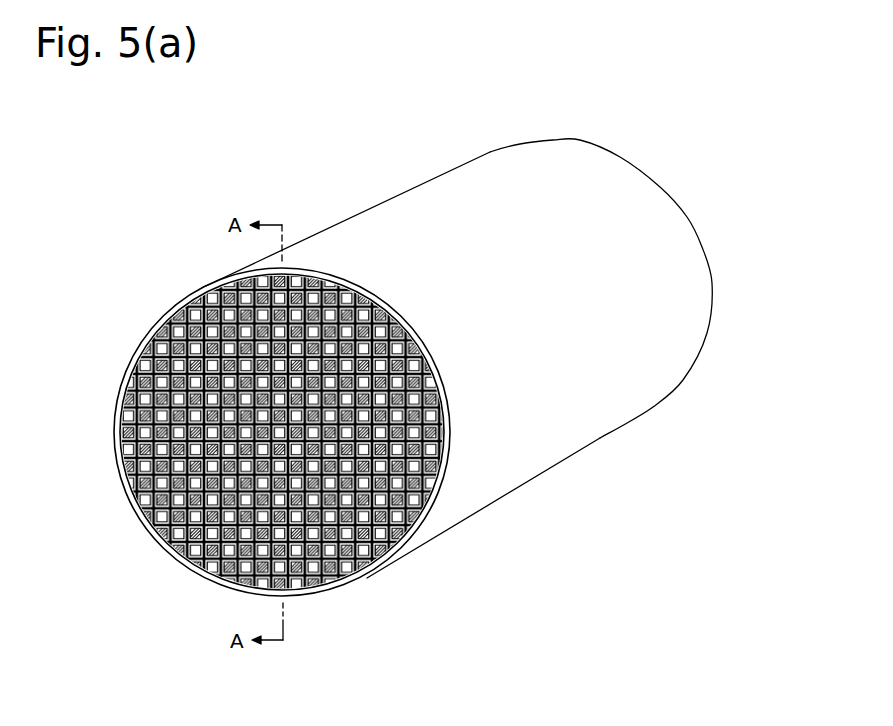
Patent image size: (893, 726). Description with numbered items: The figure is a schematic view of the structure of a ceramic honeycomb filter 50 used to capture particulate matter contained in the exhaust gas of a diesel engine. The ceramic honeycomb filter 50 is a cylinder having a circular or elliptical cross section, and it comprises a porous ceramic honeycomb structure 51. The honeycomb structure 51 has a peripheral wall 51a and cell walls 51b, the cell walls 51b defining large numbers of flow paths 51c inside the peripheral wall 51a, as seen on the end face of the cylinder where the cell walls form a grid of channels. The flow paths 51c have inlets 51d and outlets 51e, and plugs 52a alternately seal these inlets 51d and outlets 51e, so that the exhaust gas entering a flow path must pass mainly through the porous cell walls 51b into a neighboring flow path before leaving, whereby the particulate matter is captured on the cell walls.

The ceramic honeycomb filter 50 is at (148, 222).
The porous ceramic honeycomb structure 51 is at (432, 197).
The peripheral wall 51a is at (412, 322).
The cell walls 51b is at (362, 563).
The flow paths 51c is at (416, 516).
The inlets 51d is at (206, 580).
The outlets 51e is at (705, 225).
The plugs 52a is at (322, 597).